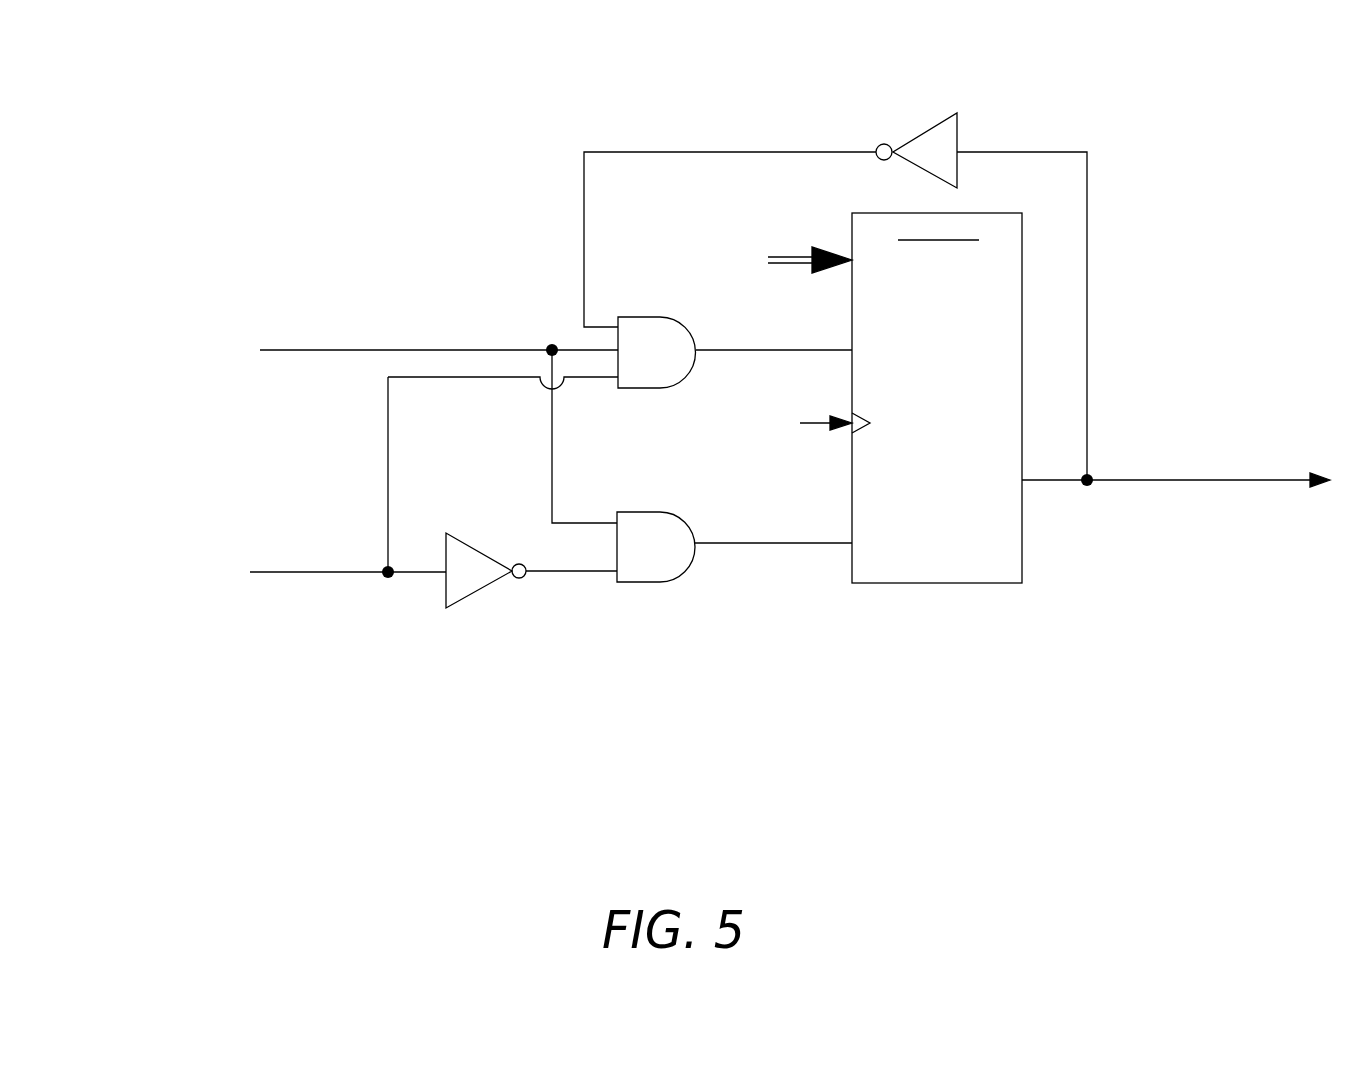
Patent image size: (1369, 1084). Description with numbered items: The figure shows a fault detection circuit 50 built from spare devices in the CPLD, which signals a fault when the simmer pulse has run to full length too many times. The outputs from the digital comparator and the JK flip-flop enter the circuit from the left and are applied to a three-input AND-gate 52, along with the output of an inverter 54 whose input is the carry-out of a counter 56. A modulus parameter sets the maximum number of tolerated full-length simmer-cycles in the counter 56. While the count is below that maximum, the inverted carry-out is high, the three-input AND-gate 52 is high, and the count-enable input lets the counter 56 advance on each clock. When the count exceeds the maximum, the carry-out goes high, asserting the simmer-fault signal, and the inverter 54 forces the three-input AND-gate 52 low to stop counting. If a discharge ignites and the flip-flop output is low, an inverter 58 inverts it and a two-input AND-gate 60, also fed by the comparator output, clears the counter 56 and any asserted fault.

The fault detection circuit 50 is at (908, 765).
The 3-input AND-gate 52 is at (680, 335).
The inverter 54 is at (947, 130).
The counter 56 is at (982, 573).
The inverter 58 is at (477, 583).
The 2-input AND-gate 60 is at (658, 573).